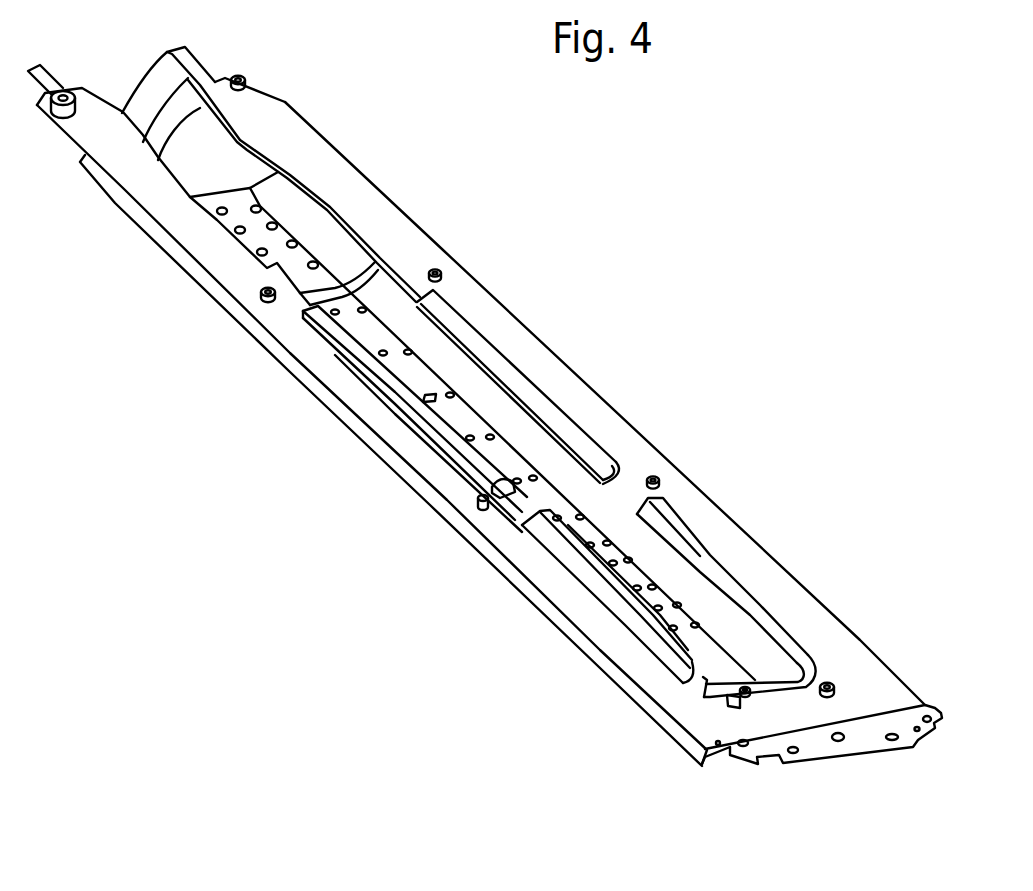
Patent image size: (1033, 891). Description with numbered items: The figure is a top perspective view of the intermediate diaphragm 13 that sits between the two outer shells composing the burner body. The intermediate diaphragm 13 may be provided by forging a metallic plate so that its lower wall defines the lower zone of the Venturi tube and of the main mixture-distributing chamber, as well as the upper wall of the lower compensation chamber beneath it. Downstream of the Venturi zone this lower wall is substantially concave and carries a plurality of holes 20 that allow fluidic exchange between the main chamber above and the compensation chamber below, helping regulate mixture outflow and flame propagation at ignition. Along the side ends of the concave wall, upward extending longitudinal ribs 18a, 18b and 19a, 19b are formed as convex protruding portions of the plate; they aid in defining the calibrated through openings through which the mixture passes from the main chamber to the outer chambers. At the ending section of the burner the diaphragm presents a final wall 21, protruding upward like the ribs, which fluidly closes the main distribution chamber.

The intermediate diaphragm 13 is at (425, 550).
The longitudinal rib 18a is at (508, 377).
The longitudinal rib 18b is at (418, 412).
The longitudinal rib 19a is at (677, 538).
The longitudinal rib 19b is at (590, 577).
The holes 20 is at (438, 394).
The final wall 21 is at (778, 680).